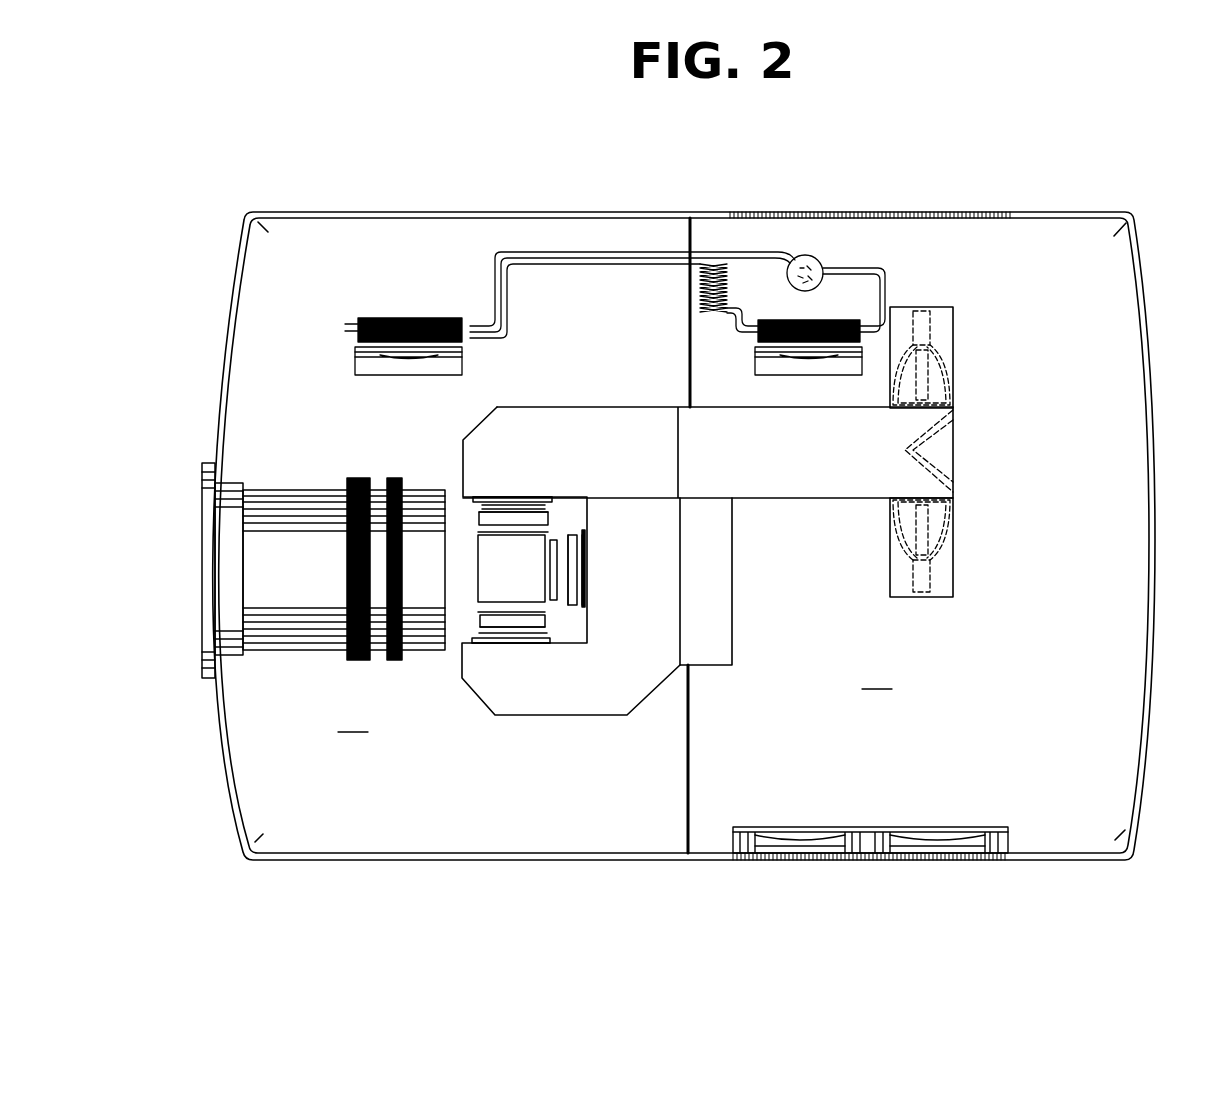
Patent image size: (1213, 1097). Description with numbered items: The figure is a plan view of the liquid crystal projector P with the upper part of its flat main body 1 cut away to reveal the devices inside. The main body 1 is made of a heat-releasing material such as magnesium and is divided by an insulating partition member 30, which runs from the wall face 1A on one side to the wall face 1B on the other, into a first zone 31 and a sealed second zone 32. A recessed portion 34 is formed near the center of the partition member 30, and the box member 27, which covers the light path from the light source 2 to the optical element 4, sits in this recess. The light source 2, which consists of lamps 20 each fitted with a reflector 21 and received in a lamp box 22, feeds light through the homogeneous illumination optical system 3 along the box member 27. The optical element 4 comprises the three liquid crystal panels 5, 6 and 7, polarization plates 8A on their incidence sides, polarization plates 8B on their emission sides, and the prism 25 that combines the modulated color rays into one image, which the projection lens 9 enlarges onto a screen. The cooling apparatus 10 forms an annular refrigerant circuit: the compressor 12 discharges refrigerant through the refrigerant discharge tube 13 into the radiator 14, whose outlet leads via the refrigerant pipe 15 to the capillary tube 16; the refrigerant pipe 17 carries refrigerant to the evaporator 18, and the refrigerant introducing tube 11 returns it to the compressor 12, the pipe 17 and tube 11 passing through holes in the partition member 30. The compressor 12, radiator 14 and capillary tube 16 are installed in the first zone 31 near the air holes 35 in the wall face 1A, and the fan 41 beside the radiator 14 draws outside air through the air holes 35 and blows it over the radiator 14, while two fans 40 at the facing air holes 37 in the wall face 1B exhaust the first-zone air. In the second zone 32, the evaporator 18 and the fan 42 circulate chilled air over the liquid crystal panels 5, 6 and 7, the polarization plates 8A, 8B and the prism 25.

The main body 1 is at (1082, 865).
The wall face 1A is at (1069, 212).
The wall face 1B is at (1048, 861).
The light source 2 is at (945, 325).
The homogeneous illumination optical system 3 is at (927, 464).
The optical element 4 is at (484, 490).
The liquid crystal panel 5 is at (515, 520).
The liquid crystal panel 6 is at (566, 565).
The liquid crystal panel 7 is at (510, 622).
The polarization plate 8A is at (487, 500).
The polarization plate 8B is at (540, 500).
The projection lens 9 is at (218, 677).
The cooling apparatus 10 is at (831, 270).
The refrigerant introducing tube 11 is at (651, 256).
The compressor 12 is at (808, 258).
The refrigerant discharge tube 13 is at (873, 405).
The radiator 14 is at (842, 322).
The refrigerant pipe 15 is at (752, 322).
The capillary tube 16 is at (717, 265).
The refrigerant pipe 17 is at (600, 252).
The evaporator 18 is at (408, 318).
The lamp 20 is at (957, 372).
The reflector 21 is at (955, 385).
The lamp box 22 is at (944, 307).
The prism 25 is at (535, 582).
The box member 27 is at (906, 307).
The partition member 30 is at (697, 265).
The first zone 31 is at (877, 676).
The second zone 32 is at (353, 719).
The recessed portion 34 is at (690, 665).
The air holes 35 is at (993, 211).
The air holes 37 is at (1003, 861).
The fan 40 is at (808, 842).
The fan 41 is at (768, 362).
The fan 42 is at (363, 362).
The liquid crystal projector P is at (1142, 846).